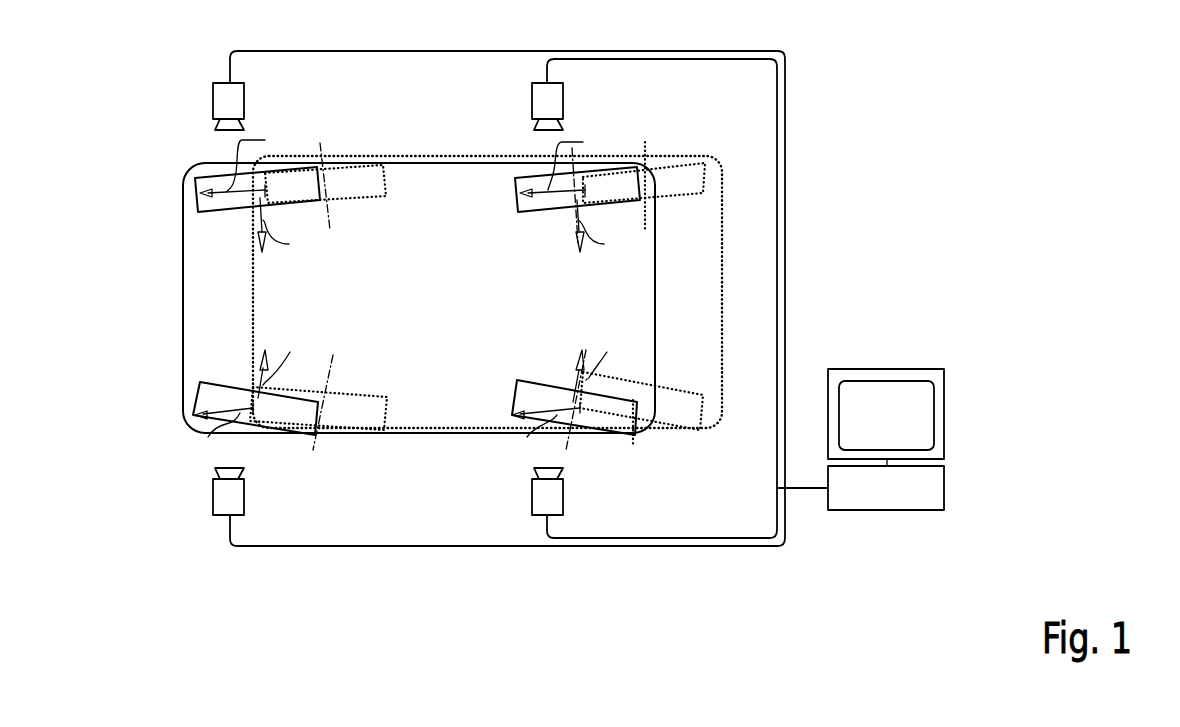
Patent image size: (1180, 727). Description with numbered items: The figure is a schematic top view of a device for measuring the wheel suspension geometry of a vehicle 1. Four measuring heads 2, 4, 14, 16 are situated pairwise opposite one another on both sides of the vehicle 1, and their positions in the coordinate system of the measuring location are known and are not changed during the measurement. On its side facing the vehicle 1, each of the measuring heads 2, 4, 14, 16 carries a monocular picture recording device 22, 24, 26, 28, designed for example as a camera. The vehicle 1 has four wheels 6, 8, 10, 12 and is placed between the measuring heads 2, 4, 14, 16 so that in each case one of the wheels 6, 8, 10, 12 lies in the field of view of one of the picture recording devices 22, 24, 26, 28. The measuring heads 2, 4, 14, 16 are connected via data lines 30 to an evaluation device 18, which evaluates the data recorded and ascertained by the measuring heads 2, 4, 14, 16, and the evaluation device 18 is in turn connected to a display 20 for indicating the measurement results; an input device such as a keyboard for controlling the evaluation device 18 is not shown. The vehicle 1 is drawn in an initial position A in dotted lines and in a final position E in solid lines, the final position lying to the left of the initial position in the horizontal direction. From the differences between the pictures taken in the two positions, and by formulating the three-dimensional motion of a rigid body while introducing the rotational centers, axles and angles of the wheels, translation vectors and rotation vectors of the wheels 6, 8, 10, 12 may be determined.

The vehicle 1 is at (147, 390).
The measuring head 2 is at (213, 90).
The measuring head 4 is at (213, 507).
The wheel 6 is at (215, 209).
The wheel 8 is at (215, 388).
The wheel 10 is at (534, 208).
The wheel 12 is at (530, 387).
The measuring head 14 is at (533, 90).
The measuring head 16 is at (532, 507).
The evaluation device 18 is at (938, 487).
The display 20 is at (938, 402).
The monocular picture recording device 22 is at (216, 126).
The monocular picture recording device 24 is at (217, 473).
The monocular picture recording device 26 is at (534, 124).
The monocular picture recording device 28 is at (534, 473).
The data lines 30 is at (352, 52).